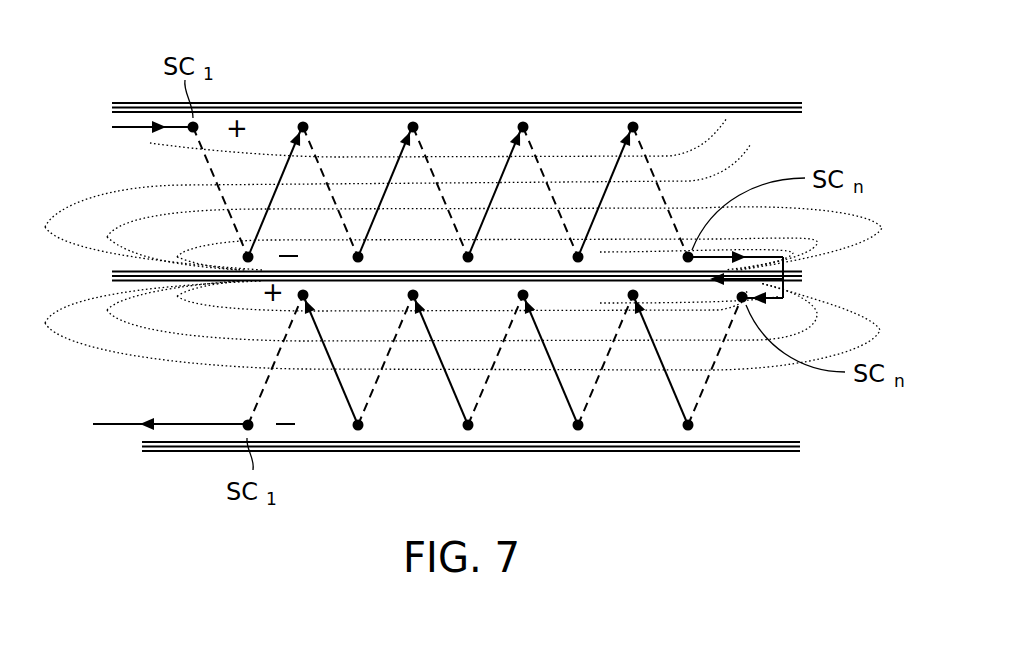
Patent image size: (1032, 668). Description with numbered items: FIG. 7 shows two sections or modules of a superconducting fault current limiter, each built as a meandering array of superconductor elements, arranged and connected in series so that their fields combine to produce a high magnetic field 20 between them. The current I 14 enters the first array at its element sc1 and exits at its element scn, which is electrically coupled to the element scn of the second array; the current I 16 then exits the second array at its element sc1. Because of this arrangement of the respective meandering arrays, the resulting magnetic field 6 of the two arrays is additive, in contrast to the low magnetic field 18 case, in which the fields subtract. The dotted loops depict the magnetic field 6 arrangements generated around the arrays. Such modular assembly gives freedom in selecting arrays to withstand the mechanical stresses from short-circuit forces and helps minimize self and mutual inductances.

The magnetic field 6 is at (60, 210).
The current I entering 14 is at (128, 128).
The current I exiting 16 is at (110, 428).
The low magnetic field region 18 is at (357, 101).
The high magnetic field region 20 is at (784, 270).